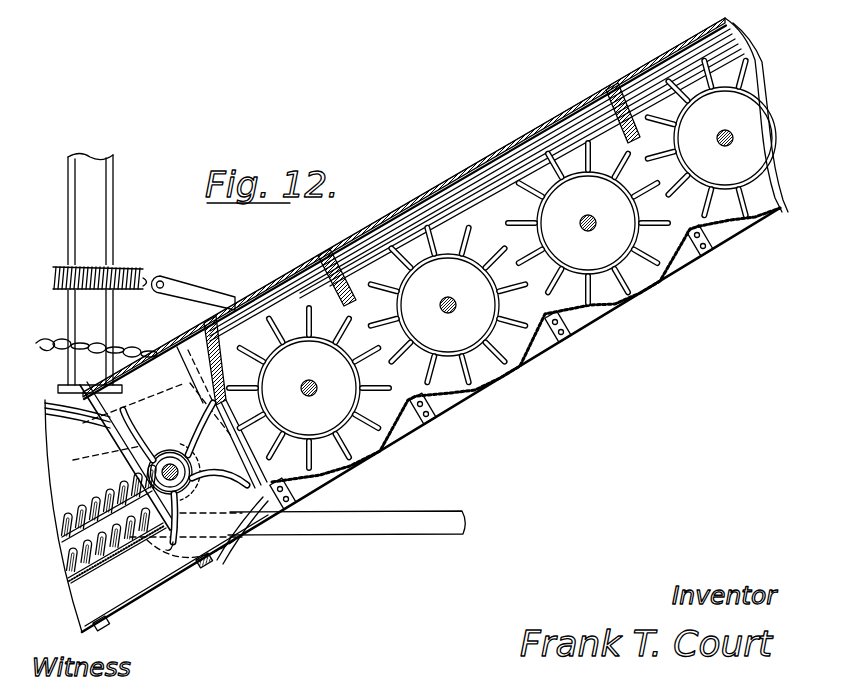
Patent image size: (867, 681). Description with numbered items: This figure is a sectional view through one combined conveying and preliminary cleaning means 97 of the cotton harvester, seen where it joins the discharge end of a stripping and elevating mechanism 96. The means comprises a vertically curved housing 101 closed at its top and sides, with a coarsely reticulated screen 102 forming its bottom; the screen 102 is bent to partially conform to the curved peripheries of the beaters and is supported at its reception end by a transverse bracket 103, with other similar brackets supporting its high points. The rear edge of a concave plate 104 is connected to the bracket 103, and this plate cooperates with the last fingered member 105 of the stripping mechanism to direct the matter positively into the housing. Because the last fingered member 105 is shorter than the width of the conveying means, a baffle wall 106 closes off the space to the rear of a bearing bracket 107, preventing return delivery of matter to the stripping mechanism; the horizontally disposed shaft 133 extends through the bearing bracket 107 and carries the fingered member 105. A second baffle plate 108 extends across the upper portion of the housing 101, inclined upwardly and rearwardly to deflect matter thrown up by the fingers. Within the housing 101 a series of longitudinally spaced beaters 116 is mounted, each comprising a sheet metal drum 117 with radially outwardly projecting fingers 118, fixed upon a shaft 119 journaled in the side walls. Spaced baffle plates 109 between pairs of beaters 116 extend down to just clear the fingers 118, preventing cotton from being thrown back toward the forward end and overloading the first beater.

The stripping and elevating mechanism 96 is at (66, 562).
The combined conveying and preliminary cleaning means 97 is at (546, 127).
The housing 101 is at (473, 171).
The screen 102 is at (590, 316).
The bracket 103 is at (708, 248).
The concave plate 104 is at (243, 525).
The last fingered member 105 is at (171, 451).
The baffle wall 106 is at (241, 429).
The bearing bracket 107 is at (199, 440).
The baffle plate 108 is at (207, 338).
The baffle plates 109 is at (336, 262).
The beater 116 is at (322, 336).
The drum 117 is at (325, 440).
The fingers 118 is at (362, 424).
The shaft 119 is at (312, 378).
The shaft 133 is at (150, 473).